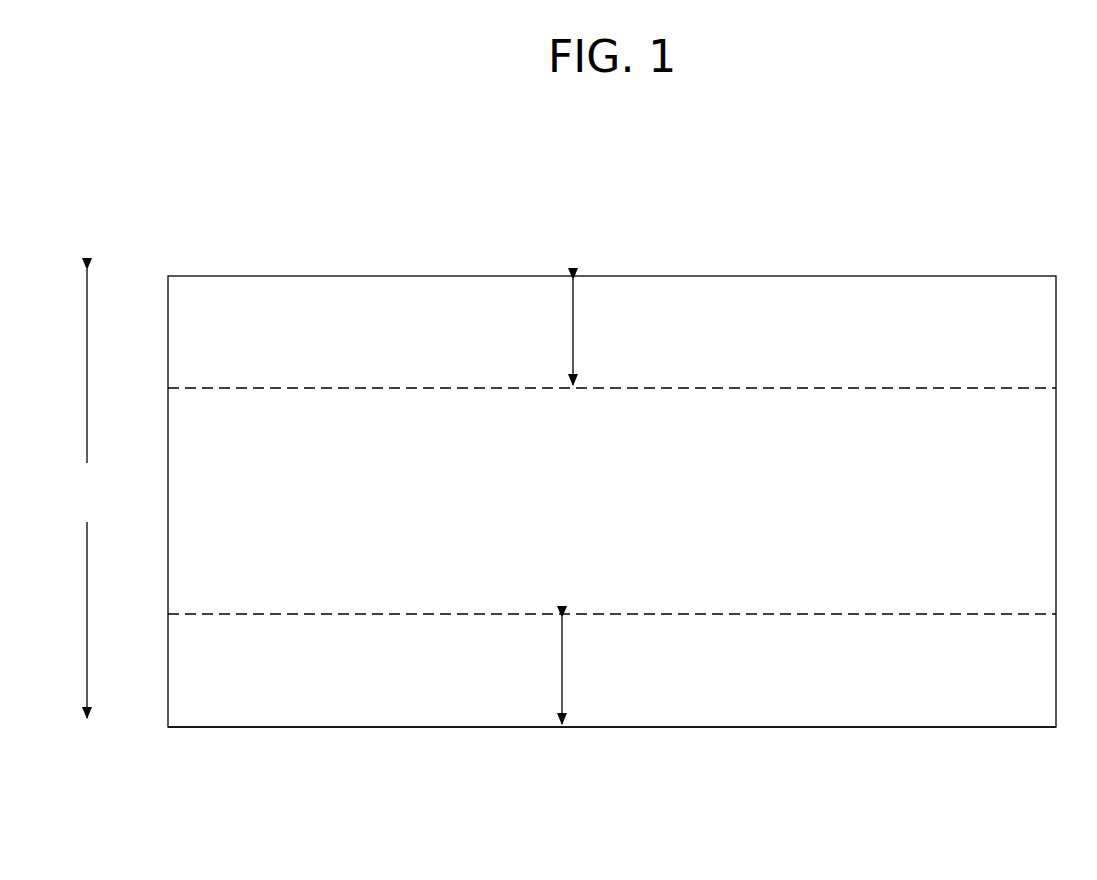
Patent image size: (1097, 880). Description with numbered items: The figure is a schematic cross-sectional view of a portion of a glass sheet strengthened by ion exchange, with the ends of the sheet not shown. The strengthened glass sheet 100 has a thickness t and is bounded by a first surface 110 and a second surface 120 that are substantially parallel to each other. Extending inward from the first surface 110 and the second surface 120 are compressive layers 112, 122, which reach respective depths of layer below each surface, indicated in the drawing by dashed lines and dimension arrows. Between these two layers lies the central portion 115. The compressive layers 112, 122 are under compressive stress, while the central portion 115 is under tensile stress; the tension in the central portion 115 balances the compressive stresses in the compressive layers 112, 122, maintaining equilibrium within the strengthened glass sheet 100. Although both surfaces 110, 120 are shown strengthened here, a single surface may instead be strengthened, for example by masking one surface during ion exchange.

The strengthened glass sheet 100 is at (635, 169).
The first surface 110 is at (258, 268).
The compressive layer 112 is at (612, 357).
The central portion 115 is at (600, 500).
The second surface 120 is at (392, 735).
The compressive layer 122 is at (612, 650).